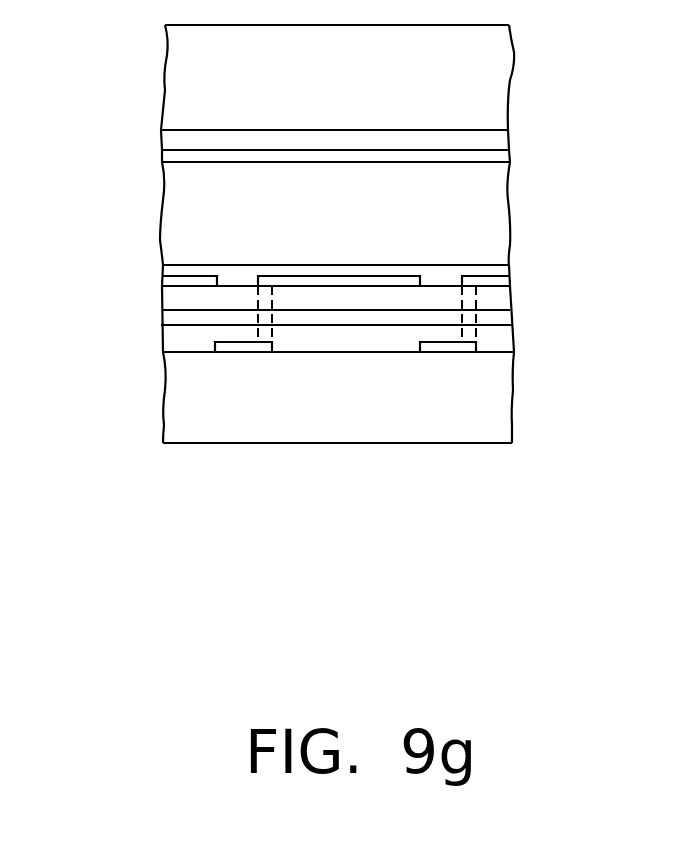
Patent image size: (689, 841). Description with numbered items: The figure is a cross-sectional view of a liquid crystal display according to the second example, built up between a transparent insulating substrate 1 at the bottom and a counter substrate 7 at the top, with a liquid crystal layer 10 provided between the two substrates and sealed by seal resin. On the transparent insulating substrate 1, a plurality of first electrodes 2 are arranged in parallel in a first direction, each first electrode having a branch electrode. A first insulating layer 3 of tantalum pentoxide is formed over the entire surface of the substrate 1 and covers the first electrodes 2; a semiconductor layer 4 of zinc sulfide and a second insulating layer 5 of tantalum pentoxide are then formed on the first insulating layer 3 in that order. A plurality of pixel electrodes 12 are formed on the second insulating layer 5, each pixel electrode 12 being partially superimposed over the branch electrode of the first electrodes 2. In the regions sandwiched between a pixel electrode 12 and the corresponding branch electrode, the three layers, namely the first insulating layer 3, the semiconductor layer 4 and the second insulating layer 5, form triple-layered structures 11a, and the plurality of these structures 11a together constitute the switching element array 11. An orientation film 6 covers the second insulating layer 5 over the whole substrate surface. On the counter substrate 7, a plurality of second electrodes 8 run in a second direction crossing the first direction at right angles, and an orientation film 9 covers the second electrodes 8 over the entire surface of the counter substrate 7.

The transparent insulating substrate 1 is at (493, 420).
The first electrodes 2 is at (483, 355).
The first insulating layer 3 is at (163, 348).
The semiconductor layer 4 is at (163, 320).
The second insulating layer 5 is at (163, 297).
The orientation film 6 is at (505, 270).
The counter substrate 7 is at (493, 69).
The second electrodes 8 is at (498, 146).
The orientation film 9 is at (510, 150).
The liquid crystal layer 10 is at (497, 218).
The switching element array 11 is at (70, 285).
The triple-layered structures 11a is at (470, 322).
The pixel electrodes 12 is at (163, 274).